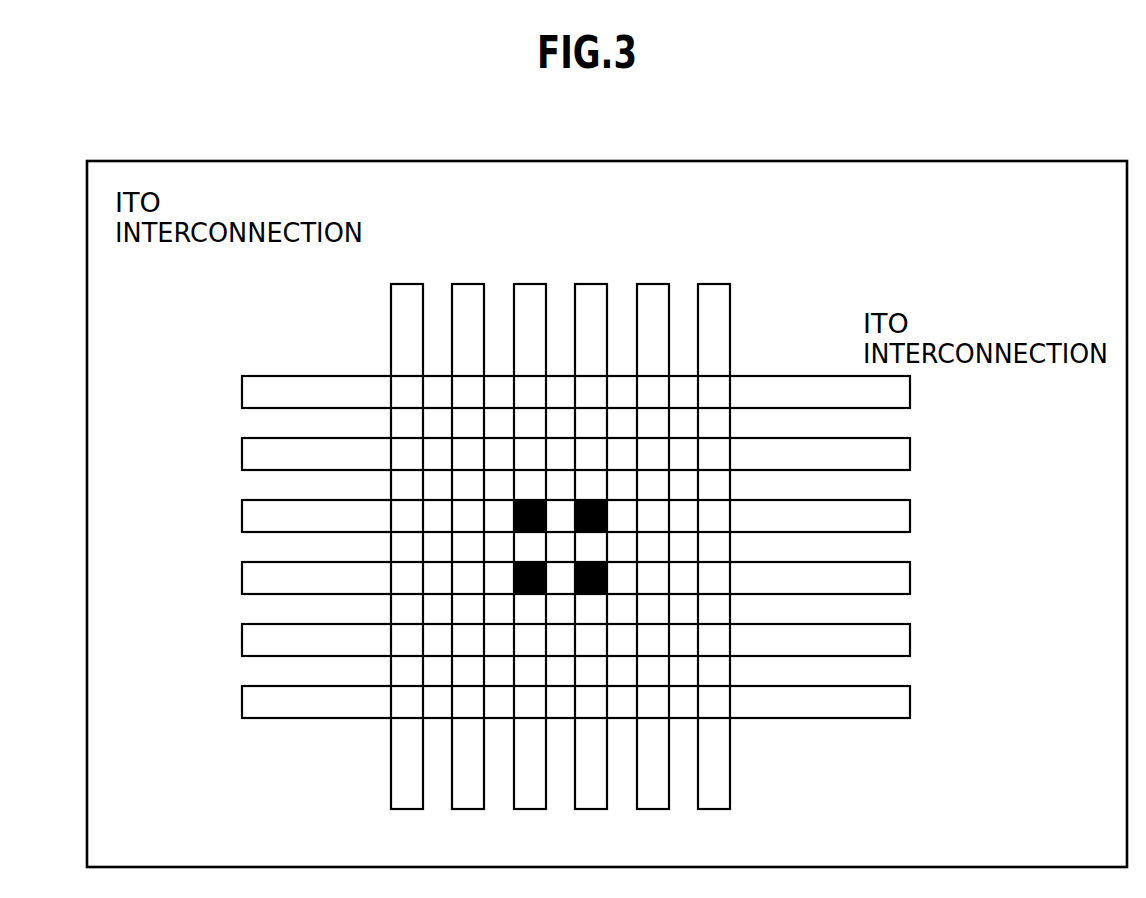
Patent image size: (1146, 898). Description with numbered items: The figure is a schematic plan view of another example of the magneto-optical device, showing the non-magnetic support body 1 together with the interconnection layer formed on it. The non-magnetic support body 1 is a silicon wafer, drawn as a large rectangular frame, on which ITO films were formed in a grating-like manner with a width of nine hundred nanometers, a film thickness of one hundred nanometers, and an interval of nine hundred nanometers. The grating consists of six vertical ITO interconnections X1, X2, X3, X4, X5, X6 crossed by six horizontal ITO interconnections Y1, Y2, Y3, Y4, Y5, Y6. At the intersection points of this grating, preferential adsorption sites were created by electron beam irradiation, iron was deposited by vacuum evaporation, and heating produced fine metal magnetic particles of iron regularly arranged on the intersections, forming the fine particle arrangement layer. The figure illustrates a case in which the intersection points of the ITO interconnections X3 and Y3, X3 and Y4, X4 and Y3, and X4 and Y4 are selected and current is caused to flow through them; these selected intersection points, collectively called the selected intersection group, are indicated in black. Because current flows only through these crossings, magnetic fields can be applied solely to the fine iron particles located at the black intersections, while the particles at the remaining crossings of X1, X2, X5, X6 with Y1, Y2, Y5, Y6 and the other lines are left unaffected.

The non-magnetic support body 1 is at (87, 749).
The ITO interconnection X1 is at (405, 284).
The ITO interconnection X2 is at (466, 284).
The ITO interconnection X3 is at (528, 284).
The ITO interconnection X4 is at (589, 284).
The ITO interconnection X5 is at (651, 284).
The ITO interconnection X6 is at (712, 284).
The ITO interconnection Y1 is at (912, 391).
The ITO interconnection Y2 is at (912, 453).
The ITO interconnection Y3 is at (912, 515).
The ITO interconnection Y4 is at (912, 577).
The ITO interconnection Y5 is at (912, 639).
The ITO interconnection Y6 is at (912, 701).